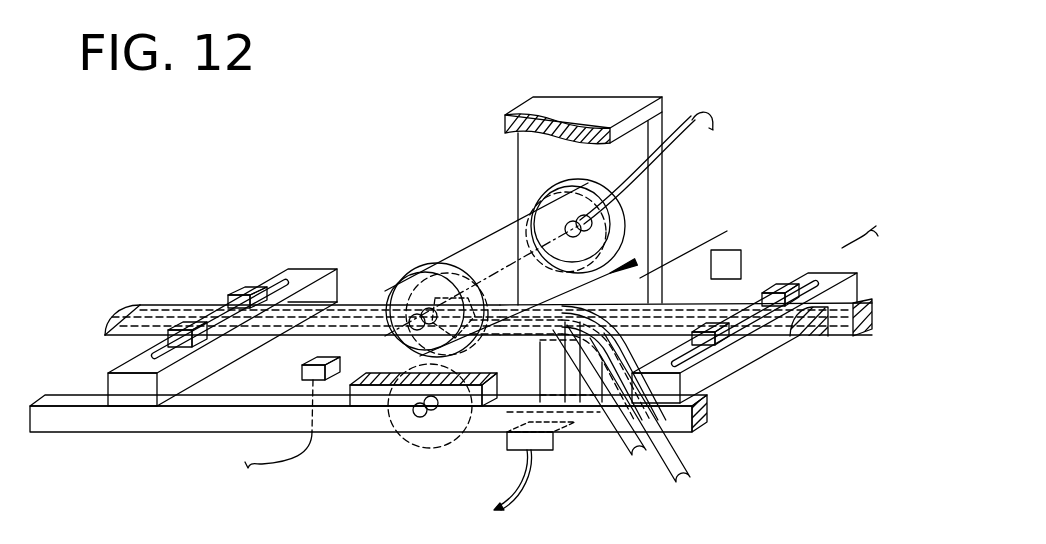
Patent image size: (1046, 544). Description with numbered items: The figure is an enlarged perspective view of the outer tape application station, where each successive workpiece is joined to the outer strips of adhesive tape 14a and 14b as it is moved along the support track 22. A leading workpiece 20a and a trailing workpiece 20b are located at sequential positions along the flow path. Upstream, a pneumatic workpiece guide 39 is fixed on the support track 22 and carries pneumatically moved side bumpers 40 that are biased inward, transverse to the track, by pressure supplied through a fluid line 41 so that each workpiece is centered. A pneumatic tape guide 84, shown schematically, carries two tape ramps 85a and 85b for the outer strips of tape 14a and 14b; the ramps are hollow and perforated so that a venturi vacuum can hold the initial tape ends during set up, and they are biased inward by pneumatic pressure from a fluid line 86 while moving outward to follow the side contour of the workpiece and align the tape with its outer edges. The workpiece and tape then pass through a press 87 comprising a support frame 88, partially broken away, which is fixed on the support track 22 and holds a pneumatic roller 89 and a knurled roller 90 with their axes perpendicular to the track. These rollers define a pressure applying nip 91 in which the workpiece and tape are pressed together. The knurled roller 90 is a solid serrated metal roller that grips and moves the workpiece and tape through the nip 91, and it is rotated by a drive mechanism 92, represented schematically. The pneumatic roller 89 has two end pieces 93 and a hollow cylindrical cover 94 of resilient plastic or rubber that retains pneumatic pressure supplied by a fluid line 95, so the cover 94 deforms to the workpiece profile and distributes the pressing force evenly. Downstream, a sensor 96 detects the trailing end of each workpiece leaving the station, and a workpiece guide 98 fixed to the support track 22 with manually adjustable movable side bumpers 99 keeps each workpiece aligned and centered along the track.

The support track 22 is at (68, 418).
The workpiece guide 98 is at (125, 408).
The movable side bumpers 99 is at (247, 288).
The leading workpiece 20a is at (133, 312).
The trailing workpiece 20b is at (773, 330).
The pneumatic workpiece guide 39 is at (768, 372).
The side bumpers 40 is at (775, 293).
The fluid line 41 is at (845, 247).
The drive mechanism 92 is at (731, 254).
The sensor 96 is at (302, 368).
The knurled roller 90 is at (433, 438).
The pneumatic roller 89 is at (485, 200).
The end pieces 93 is at (583, 188).
The hollow cylindrical cover 94 is at (467, 250).
The support frame 88 is at (530, 182).
The press 87 is at (567, 58).
The fluid line 95 is at (683, 124).
The pressure applying nip 91 is at (640, 272).
The tape ramp 85a is at (640, 333).
The tape ramp 85b is at (562, 360).
The outer strip of adhesive tape 14a is at (672, 444).
The outer strip of adhesive tape 14b is at (615, 437).
The pneumatic tape guide 84 is at (558, 438).
The fluid line 86 is at (527, 466).